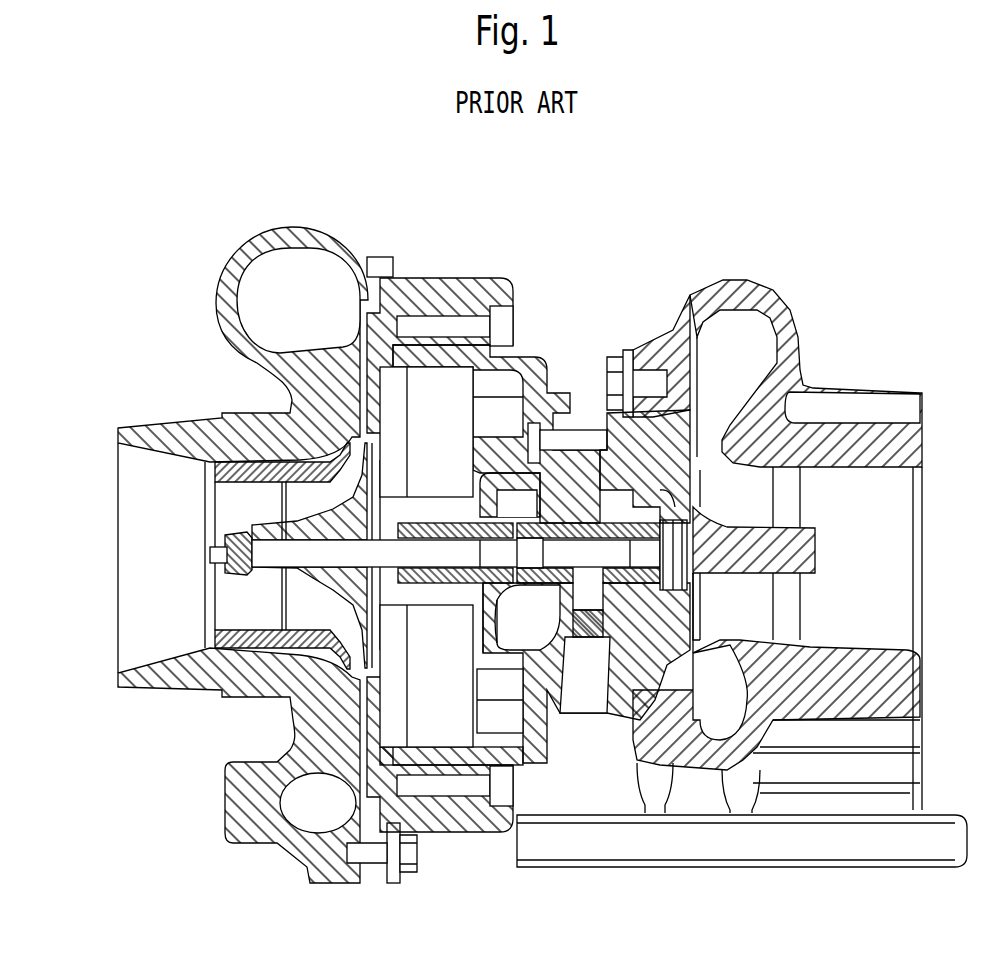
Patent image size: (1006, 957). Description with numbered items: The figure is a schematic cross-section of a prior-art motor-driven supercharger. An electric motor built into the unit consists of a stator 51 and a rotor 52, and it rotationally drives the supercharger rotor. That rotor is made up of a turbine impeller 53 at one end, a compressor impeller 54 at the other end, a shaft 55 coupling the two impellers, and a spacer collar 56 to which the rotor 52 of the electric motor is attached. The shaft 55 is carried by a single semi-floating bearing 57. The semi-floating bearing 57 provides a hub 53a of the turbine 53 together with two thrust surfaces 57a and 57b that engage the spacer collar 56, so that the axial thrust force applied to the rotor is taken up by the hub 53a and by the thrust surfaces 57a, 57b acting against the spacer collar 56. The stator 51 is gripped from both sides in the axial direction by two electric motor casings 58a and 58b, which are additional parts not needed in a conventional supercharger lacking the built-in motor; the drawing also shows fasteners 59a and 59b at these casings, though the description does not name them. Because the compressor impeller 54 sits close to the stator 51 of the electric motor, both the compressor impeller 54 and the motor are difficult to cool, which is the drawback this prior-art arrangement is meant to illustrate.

The stator 51 is at (455, 428).
The rotor 52 is at (425, 588).
The turbine impeller 53 is at (732, 537).
The hub of the turbine 53a is at (658, 515).
The compressor impeller 54 is at (275, 528).
The shaft 55 is at (530, 555).
The spacer collar 56 is at (422, 524).
The semi-floating bearing 57 is at (582, 527).
The thrust surface 57a is at (672, 573).
The thrust surface 57b is at (495, 592).
The electric motor casing 58a is at (405, 287).
The electric motor casing 58b is at (520, 350).
The bolt 59a is at (468, 323).
The bolt 59b is at (560, 442).